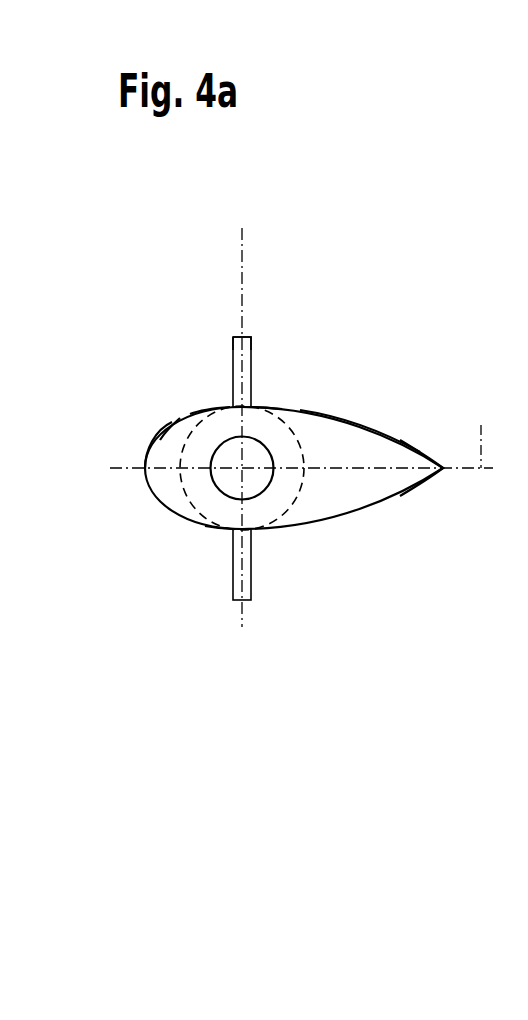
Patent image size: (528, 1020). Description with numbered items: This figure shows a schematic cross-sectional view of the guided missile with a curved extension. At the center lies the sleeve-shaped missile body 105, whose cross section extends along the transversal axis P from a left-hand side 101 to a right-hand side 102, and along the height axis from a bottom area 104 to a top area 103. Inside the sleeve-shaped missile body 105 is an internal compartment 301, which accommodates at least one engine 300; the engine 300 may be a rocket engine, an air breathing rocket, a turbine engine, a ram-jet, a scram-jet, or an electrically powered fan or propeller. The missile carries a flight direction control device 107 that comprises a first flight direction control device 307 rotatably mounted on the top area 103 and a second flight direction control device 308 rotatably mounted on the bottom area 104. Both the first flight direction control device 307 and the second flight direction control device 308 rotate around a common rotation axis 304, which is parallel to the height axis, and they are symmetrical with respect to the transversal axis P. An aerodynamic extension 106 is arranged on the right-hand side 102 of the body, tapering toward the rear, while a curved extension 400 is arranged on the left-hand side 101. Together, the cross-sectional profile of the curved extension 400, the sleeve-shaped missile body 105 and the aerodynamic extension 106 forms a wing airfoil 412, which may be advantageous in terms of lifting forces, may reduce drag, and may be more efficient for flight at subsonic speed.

The left-hand side 101 is at (146, 489).
The right-hand side 102 is at (444, 471).
The top area 103 is at (258, 405).
The bottom area 104 is at (226, 531).
The sleeve-shaped missile body 105 is at (206, 407).
The aerodynamic extension 106 is at (386, 453).
The flight direction control device 107 is at (248, 336).
The engine 300 is at (228, 478).
The internal compartment 301 is at (287, 486).
The rotation axis 304 is at (244, 246).
The first flight direction control device 307 is at (252, 350).
The second flight direction control device 308 is at (252, 589).
The curved extension 400 is at (157, 459).
The wing airfoil 412 is at (172, 422).
The transversal axis P is at (483, 431).